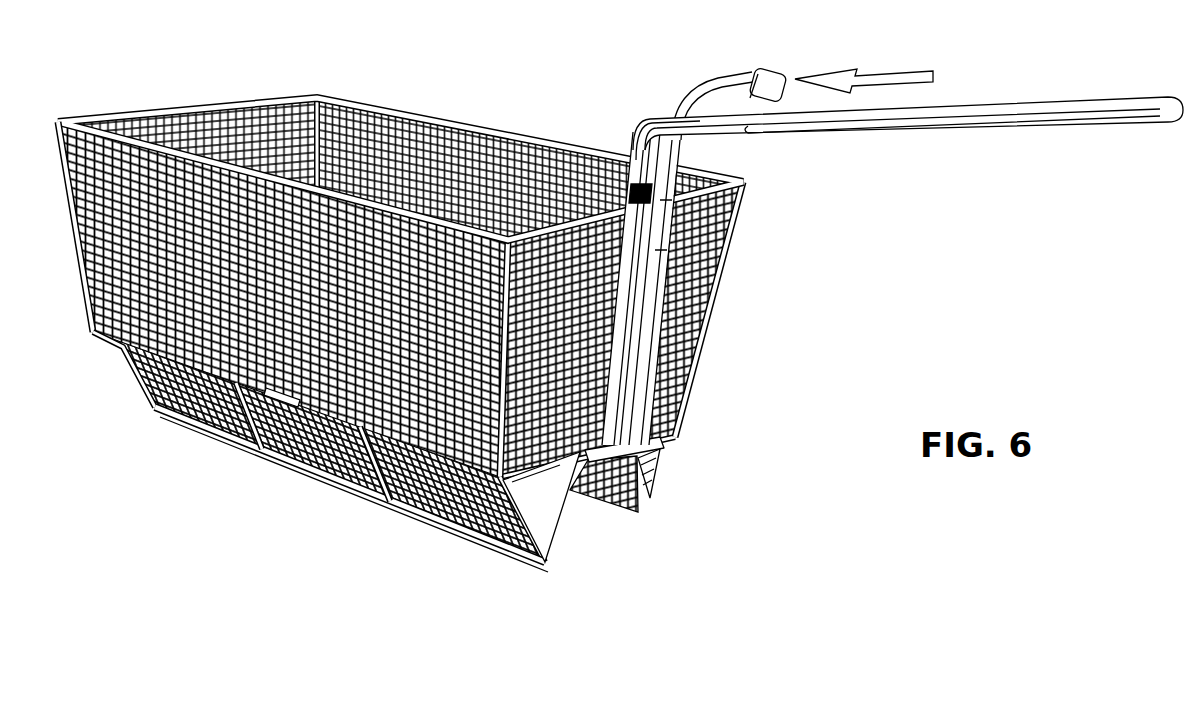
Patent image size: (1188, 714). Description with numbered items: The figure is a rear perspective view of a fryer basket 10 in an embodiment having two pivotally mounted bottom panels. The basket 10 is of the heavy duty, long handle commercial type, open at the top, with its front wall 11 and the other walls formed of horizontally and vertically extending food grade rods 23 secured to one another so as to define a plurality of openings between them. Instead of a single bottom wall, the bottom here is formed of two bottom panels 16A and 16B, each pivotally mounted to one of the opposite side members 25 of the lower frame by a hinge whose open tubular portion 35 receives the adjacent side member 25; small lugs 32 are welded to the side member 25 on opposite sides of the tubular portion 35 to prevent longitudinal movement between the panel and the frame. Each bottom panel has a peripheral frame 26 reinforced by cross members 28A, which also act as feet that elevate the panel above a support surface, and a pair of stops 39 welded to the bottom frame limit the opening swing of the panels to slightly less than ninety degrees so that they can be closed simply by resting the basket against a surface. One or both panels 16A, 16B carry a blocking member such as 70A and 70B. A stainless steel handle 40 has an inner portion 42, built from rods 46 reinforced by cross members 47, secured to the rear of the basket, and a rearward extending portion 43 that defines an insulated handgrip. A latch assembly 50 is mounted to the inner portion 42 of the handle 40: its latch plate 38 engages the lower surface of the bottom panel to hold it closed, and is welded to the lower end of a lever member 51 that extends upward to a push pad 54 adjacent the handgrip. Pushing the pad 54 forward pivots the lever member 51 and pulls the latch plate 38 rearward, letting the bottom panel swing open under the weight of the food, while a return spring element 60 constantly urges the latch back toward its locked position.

The fryer basket 10 is at (496, 138).
The front wall 11 is at (212, 118).
The bottom panel 16A is at (440, 535).
The bottom panel 16B is at (618, 522).
The rods 23 is at (656, 287).
The side member 25 is at (135, 363).
The peripheral frame 26 is at (490, 546).
The cross members 28A is at (250, 443).
The lugs 32 is at (290, 458).
The tubular portion 35 is at (260, 448).
The latch plate 38 is at (632, 463).
The stops 39 is at (146, 392).
The handle 40 is at (1067, 99).
The inner portion 42 is at (668, 393).
The rearward extending portion 43 is at (748, 128).
The rods 46 is at (656, 332).
The cross members 47 is at (622, 165).
The latch assembly 50 is at (690, 88).
The lever member 51 is at (688, 365).
The push pad 54 is at (763, 72).
The return spring element 60 is at (673, 196).
The blocking member 70A is at (545, 527).
The blocking member 70B is at (641, 475).